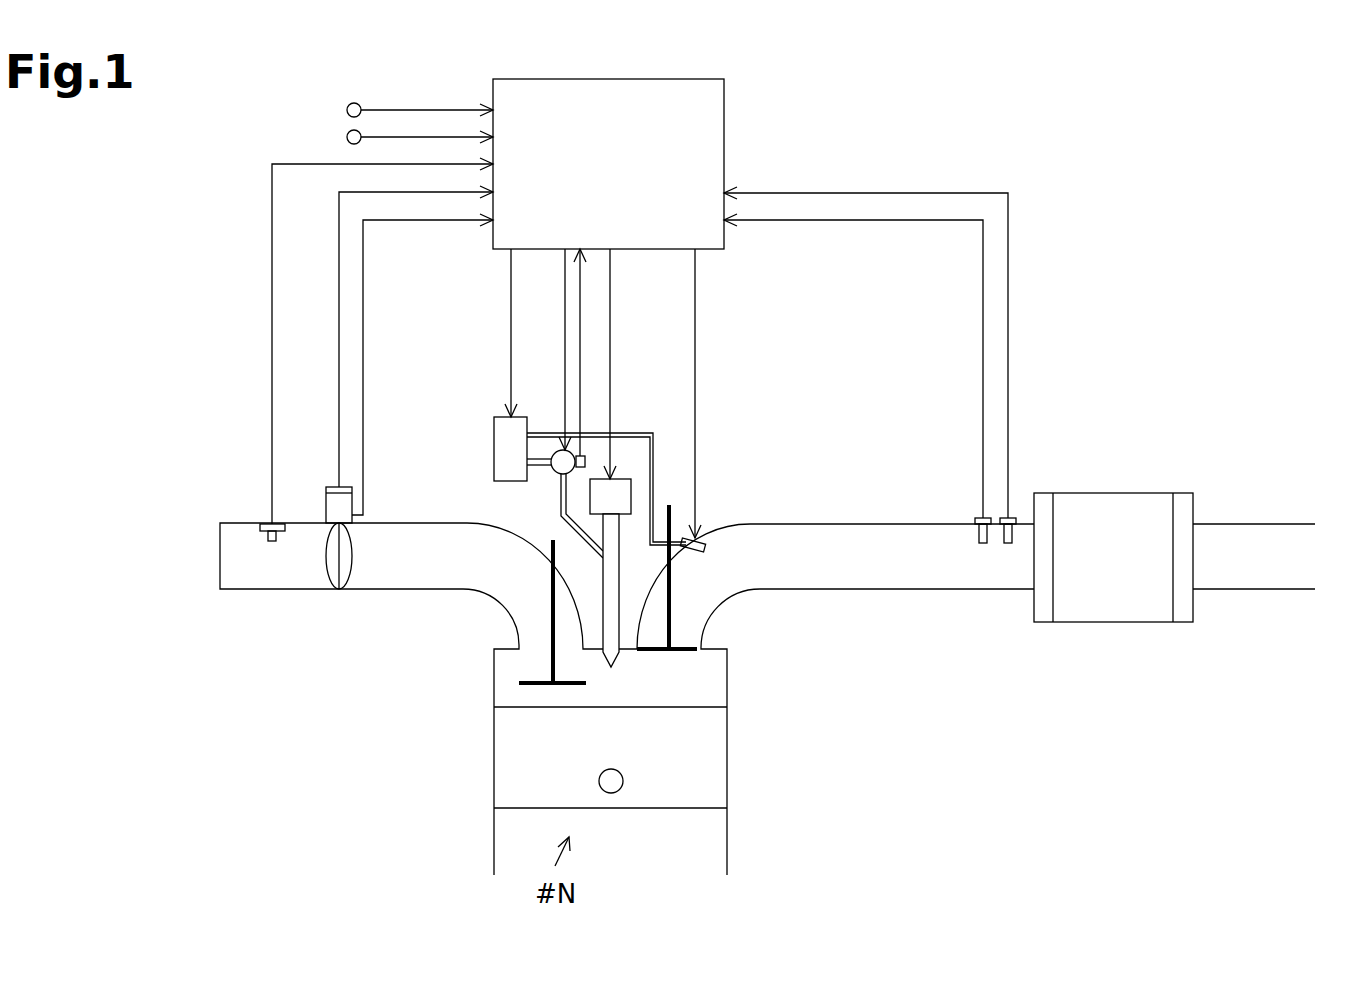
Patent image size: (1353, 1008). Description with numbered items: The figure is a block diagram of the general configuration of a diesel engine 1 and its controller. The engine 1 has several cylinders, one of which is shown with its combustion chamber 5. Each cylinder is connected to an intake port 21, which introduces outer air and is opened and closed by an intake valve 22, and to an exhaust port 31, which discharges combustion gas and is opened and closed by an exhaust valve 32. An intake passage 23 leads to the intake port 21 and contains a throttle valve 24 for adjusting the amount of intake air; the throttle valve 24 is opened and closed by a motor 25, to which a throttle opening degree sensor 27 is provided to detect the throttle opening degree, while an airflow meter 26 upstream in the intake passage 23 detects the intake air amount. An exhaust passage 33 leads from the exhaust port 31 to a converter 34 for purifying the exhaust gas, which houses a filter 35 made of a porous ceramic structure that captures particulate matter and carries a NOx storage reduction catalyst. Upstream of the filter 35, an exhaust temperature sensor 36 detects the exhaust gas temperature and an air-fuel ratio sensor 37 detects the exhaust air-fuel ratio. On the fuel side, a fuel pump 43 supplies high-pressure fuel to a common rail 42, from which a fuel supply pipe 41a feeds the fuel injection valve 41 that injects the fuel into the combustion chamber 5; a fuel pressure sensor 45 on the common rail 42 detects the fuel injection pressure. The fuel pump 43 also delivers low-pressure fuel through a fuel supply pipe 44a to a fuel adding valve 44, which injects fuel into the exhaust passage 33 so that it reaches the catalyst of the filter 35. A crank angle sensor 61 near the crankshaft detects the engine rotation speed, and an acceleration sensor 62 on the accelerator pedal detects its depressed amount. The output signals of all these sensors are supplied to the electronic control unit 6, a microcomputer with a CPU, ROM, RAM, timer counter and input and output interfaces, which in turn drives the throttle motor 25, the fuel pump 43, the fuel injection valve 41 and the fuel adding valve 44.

The engine 1 is at (972, 727).
The combustion chamber 5 is at (644, 697).
The electronic control unit 6 is at (610, 78).
The intake port 21 is at (510, 618).
The intake valve 22 is at (552, 669).
The intake passage 23 is at (292, 590).
The throttle valve 24 is at (352, 570).
The motor 25 is at (352, 515).
The airflow meter 26 is at (268, 523).
The throttle opening degree sensor 27 is at (337, 487).
The exhaust port 31 is at (707, 625).
The exhaust valve 32 is at (672, 587).
The exhaust passage 33 is at (872, 592).
The converter 34 is at (1099, 637).
The filter 35 is at (1123, 502).
The exhaust temperature sensor 36 is at (974, 518).
The air-fuel ratio sensor 37 is at (1013, 518).
The fuel injection valve 41 is at (603, 578).
The fuel supply pipe 41a is at (573, 533).
The common rail 42 is at (560, 479).
The fuel pump 43 is at (493, 460).
The fuel adding valve 44 is at (698, 542).
The fuel supply pipe 44a is at (655, 450).
The fuel pressure sensor 45 is at (587, 458).
The crank angle sensor 61 is at (346, 108).
The acceleration sensor 62 is at (346, 135).